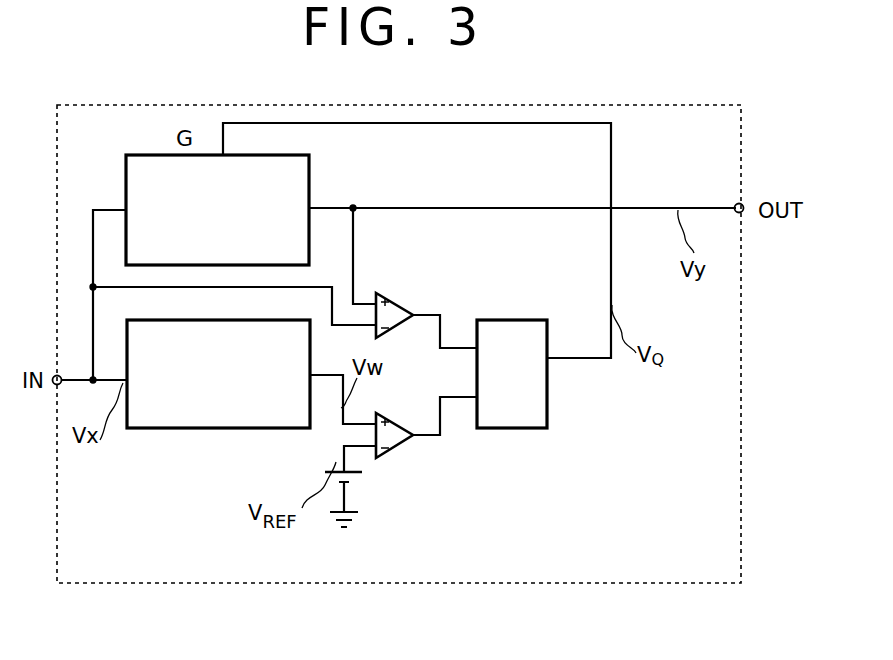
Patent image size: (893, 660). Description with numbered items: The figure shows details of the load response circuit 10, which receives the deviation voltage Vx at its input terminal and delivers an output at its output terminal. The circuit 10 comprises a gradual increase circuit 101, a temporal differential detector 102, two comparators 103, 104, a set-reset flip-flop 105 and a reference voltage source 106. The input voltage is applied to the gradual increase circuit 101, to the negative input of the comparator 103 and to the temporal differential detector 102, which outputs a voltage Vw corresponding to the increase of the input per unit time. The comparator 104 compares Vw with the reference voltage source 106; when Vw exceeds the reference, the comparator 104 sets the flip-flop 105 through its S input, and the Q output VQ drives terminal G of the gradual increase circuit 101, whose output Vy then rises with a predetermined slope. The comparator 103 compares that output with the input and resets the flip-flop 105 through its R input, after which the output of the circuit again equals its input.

The load response circuit 10 is at (275, 583).
The gradual increase circuit 101 is at (311, 183).
The temporal differential detector 102 is at (231, 430).
The comparator 103 is at (393, 298).
The comparator 104 is at (392, 452).
The set-reset flip-flop 105 is at (548, 398).
The reference voltage source 106 is at (355, 478).